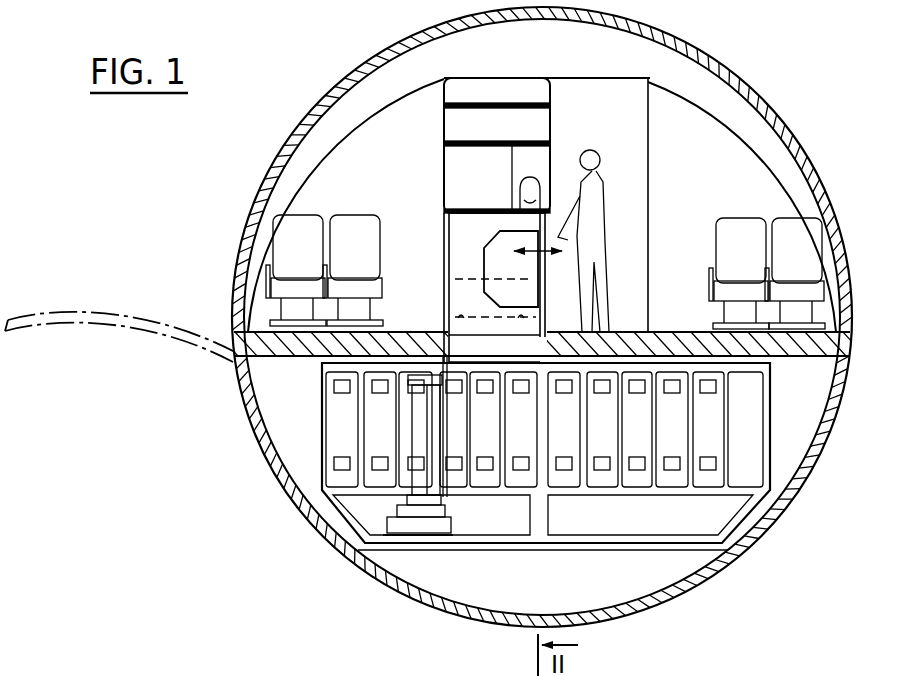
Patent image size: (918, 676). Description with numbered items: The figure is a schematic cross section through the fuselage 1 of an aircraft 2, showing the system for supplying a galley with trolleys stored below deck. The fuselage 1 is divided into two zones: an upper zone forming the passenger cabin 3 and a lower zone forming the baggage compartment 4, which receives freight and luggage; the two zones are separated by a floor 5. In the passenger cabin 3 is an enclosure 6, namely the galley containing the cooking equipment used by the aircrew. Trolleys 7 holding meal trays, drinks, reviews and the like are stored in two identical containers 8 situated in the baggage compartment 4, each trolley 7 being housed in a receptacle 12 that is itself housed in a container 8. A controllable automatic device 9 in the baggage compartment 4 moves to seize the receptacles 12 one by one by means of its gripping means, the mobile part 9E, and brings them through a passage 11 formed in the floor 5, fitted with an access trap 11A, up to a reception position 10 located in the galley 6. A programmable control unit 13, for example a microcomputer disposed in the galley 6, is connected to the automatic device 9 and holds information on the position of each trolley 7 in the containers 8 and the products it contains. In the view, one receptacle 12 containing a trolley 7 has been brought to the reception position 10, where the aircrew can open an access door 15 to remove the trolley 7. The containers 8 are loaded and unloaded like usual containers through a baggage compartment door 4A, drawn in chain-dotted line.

The fuselage 1 is at (327, 103).
The aircraft 2 is at (232, 198).
The passenger cabin 3 is at (777, 175).
The baggage compartment 4 is at (800, 440).
The baggage compartment door 4A is at (127, 318).
The floor 5 is at (789, 342).
The enclosure 6 is at (440, 127).
The trolley 7 is at (500, 273).
The container 8 is at (322, 413).
The controllable automatic device 9 is at (383, 512).
The mobile part 9E is at (467, 340).
The reception position 10 is at (442, 264).
The passage 11 is at (523, 352).
The access trap 11A is at (442, 298).
The receptacle 12 is at (444, 212).
The programmable control unit 13 is at (527, 185).
The access door 15 is at (562, 238).